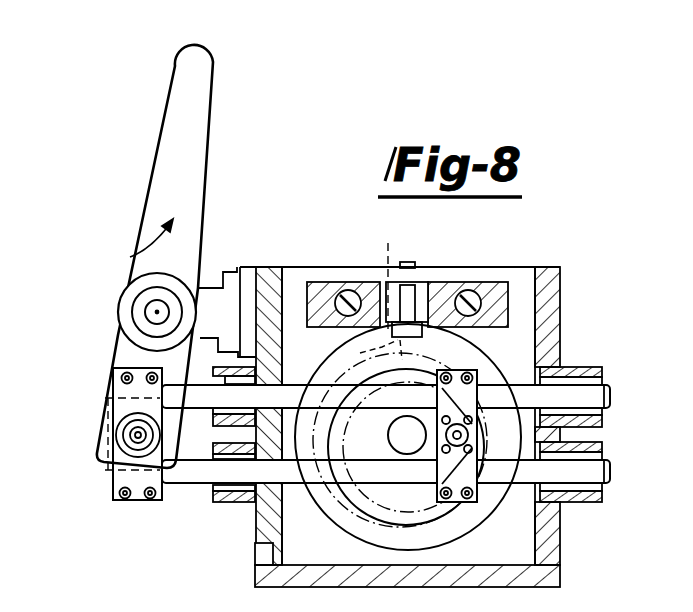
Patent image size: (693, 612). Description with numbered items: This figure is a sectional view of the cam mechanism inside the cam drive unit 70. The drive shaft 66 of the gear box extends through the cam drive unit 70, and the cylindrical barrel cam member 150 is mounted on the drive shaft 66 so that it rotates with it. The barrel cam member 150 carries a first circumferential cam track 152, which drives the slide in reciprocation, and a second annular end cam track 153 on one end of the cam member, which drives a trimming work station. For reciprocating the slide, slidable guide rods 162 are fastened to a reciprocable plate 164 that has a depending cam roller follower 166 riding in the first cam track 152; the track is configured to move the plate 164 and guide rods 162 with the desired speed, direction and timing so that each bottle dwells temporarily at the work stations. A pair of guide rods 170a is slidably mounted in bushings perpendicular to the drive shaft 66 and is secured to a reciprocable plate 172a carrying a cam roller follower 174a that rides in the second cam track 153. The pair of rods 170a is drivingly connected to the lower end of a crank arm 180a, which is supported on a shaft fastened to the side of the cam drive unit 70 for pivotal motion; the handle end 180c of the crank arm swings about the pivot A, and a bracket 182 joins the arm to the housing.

The cam drive unit 70 is at (567, 290).
The barrel cam member 150 is at (500, 377).
The first circumferential cam track 152 is at (371, 279).
The second annular end cam track 153 is at (337, 503).
The guide rods 162 is at (333, 285).
The reciprocable plate 164 is at (447, 281).
The cam roller follower 166 is at (402, 355).
The pair of guide rods 170a is at (598, 396).
The reciprocable plate 172a is at (450, 502).
The cam roller follower 174a is at (562, 440).
The crank arm 180a is at (133, 255).
The lever handle 180c is at (210, 72).
The lever bracket 182 is at (214, 280).
The drive shaft 66 is at (398, 436).
The pivot axis A is at (152, 312).